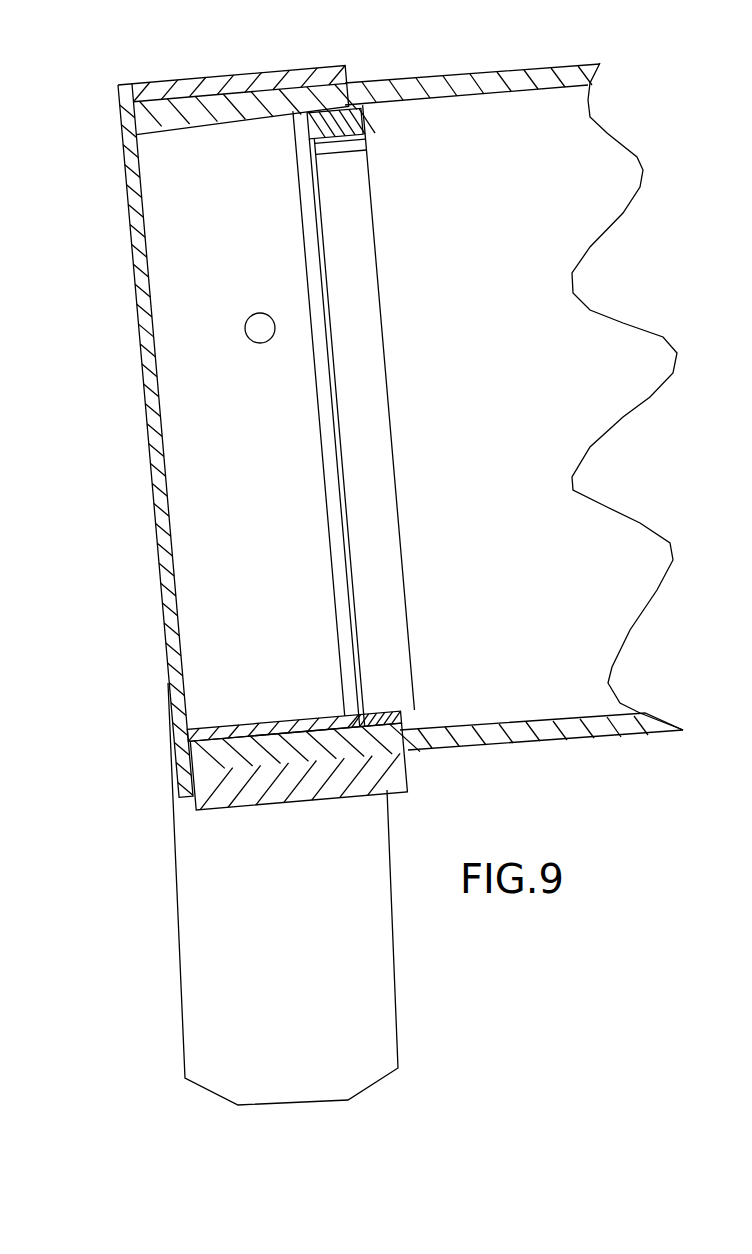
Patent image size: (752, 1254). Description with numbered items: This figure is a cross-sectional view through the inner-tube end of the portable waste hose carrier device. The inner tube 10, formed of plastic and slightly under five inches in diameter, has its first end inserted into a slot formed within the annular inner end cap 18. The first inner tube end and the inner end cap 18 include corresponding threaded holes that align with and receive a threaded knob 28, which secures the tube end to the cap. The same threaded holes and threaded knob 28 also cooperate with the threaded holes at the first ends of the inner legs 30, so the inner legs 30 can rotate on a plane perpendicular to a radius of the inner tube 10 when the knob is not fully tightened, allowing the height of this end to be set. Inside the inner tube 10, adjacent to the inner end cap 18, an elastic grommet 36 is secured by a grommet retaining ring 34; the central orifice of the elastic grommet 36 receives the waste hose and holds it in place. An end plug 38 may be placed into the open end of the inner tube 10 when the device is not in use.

The inner tube 10 is at (470, 83).
The inner end cap 18 is at (152, 90).
The threaded knob 28 is at (245, 326).
The inner legs 30 is at (212, 938).
The grommet retaining ring 34 is at (400, 720).
The elastic grommet 36 is at (353, 650).
The end plug 38 is at (155, 441).